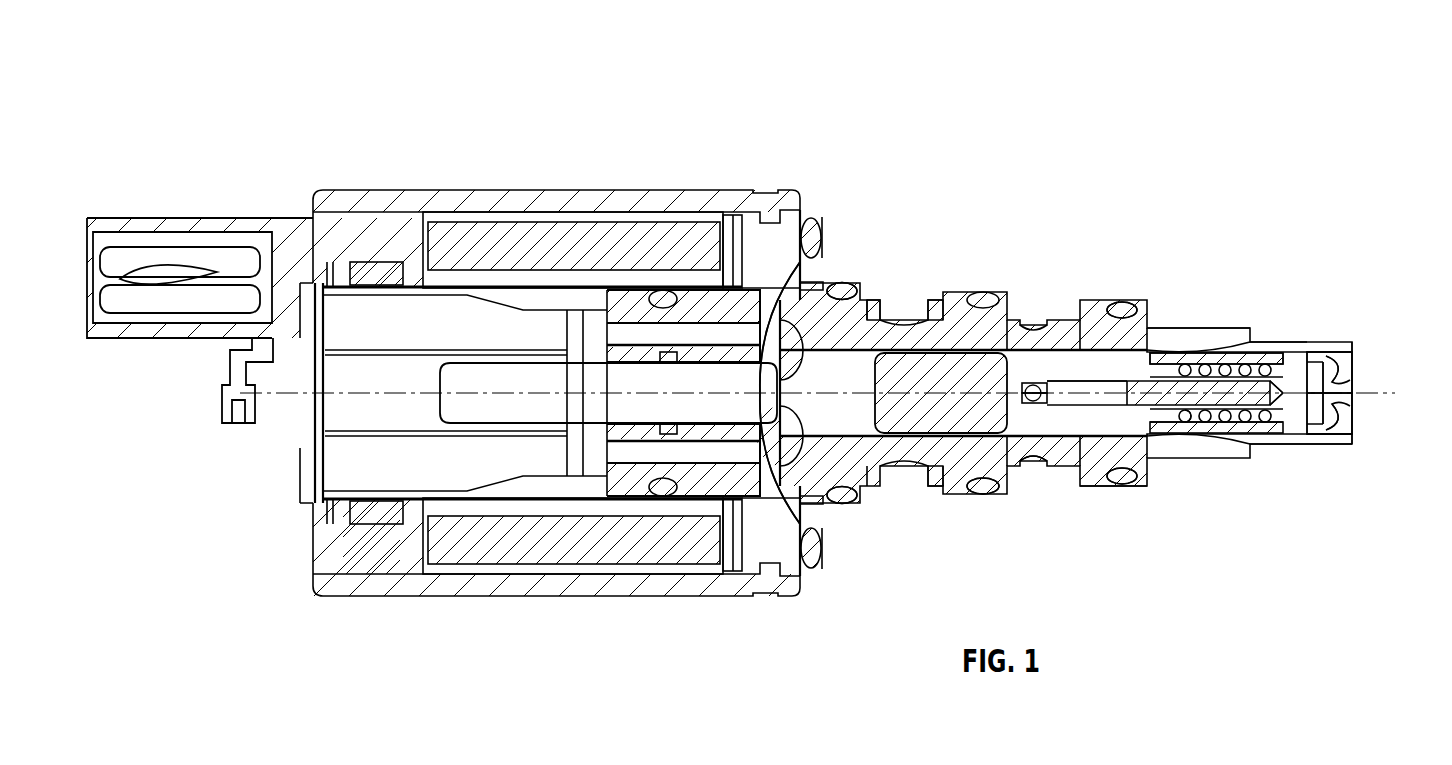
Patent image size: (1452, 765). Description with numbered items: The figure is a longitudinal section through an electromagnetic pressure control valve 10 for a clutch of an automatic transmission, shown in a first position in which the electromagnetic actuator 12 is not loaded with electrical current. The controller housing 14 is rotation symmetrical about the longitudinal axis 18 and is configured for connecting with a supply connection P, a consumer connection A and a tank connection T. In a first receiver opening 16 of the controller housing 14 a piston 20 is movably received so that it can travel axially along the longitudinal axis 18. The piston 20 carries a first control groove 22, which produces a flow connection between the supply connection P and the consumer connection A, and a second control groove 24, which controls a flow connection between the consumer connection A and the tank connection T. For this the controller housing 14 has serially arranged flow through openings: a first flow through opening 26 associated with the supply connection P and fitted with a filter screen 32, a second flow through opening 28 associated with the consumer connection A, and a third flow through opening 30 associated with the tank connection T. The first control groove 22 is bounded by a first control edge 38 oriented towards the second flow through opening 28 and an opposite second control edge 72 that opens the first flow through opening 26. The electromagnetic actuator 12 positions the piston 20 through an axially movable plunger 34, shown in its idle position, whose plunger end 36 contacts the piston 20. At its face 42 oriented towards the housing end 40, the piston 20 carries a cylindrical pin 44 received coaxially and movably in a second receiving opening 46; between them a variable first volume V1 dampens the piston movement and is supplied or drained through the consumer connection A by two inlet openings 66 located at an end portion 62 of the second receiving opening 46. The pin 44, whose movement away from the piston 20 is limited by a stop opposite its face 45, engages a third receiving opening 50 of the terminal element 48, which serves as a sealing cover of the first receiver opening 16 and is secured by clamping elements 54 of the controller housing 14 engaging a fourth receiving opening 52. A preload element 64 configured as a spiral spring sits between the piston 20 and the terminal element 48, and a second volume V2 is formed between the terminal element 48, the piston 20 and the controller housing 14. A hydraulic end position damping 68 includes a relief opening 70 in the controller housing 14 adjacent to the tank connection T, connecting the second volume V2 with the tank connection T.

The electromagnetic pressure control valve 10 is at (1020, 164).
The electromagnetic actuator 12 is at (228, 168).
The controller housing 14 is at (1325, 360).
The first receiver opening 16 is at (958, 325).
The longitudinal axis 18 is at (1385, 400).
The piston 20 is at (905, 450).
The first control groove 22 is at (966, 450).
The second control groove 24 is at (1152, 452).
The first flow through opening 26 is at (912, 312).
The second flow through opening 28 is at (1048, 320).
The third flow through opening 30 is at (1140, 318).
The filter screen 32 is at (866, 310).
The plunger 34 is at (540, 380).
The plunger end 36 is at (795, 320).
The first control edge 38 is at (1010, 432).
The housing end 40 is at (1364, 350).
The face 42 is at (1200, 446).
The cylindrical pin 44 is at (1165, 342).
The face of the pin 45 is at (1275, 442).
The second receiving opening 46 is at (1095, 452).
The terminal element 48 is at (1306, 442).
The third receiving opening 50 is at (1240, 430).
The fourth receiving opening 52 is at (1322, 388).
The clamping elements 54 is at (1345, 355).
The end portion 62 is at (1024, 384).
The preload element 64 is at (1298, 362).
The inlet openings 66 is at (1054, 442).
The hydraulic end position damping 68 is at (1270, 258).
The relief opening 70 is at (1226, 342).
The second control edge 72 is at (870, 452).
The supply connection P is at (904, 272).
The consumer connection A is at (1043, 272).
The tank connection T is at (1170, 275).
The first volume V1 is at (1110, 375).
The second volume V2 is at (1250, 356).